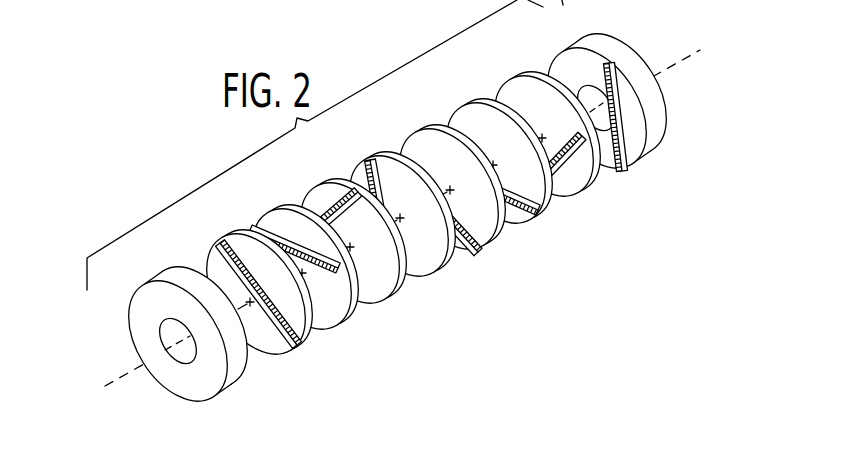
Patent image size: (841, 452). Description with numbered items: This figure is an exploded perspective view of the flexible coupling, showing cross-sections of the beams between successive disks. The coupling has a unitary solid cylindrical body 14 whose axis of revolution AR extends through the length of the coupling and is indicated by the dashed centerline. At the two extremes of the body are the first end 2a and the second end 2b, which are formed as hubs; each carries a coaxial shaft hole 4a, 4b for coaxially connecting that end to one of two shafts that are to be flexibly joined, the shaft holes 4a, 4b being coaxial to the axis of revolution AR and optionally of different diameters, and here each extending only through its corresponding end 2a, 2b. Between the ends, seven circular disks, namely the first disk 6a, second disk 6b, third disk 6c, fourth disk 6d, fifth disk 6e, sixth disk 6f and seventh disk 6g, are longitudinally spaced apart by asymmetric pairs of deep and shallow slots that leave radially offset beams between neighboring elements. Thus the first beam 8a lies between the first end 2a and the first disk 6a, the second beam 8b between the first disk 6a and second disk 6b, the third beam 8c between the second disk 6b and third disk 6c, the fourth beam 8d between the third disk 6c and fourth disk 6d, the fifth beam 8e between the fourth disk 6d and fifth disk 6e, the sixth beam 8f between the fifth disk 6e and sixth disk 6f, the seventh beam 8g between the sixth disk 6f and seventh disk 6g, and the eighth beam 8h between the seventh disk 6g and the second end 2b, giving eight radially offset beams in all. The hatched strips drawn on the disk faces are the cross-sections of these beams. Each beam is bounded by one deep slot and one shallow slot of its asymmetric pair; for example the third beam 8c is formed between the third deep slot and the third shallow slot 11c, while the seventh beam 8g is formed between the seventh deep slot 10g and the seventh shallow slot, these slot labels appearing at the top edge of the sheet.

The first end 2a is at (607, 33).
The second end 2b is at (135, 305).
The shaft hole 4a is at (583, 84).
The shaft hole 4b is at (178, 368).
The first disk 6a is at (537, 73).
The second disk 6b is at (481, 100).
The third disk 6c is at (433, 121).
The fourth disk 6d is at (381, 156).
The fifth disk 6e is at (326, 183).
The sixth disk 6f is at (276, 212).
The seventh disk 6g is at (203, 268).
The first beam 8a is at (627, 160).
The second beam 8b is at (580, 176).
The third beam 8c is at (517, 213).
The fourth beam 8d is at (474, 251).
The fifth beam 8e is at (420, 270).
The sixth beam 8f is at (380, 277).
The seventh beam 8g is at (333, 318).
The eighth beam 8h is at (281, 333).
The cylindrical body 14 is at (681, 118).
The axis of revolution AR is at (256, 310).
The seventh deep slot 10g is at (100, 0).
The third shallow slot 11c is at (246, 17).